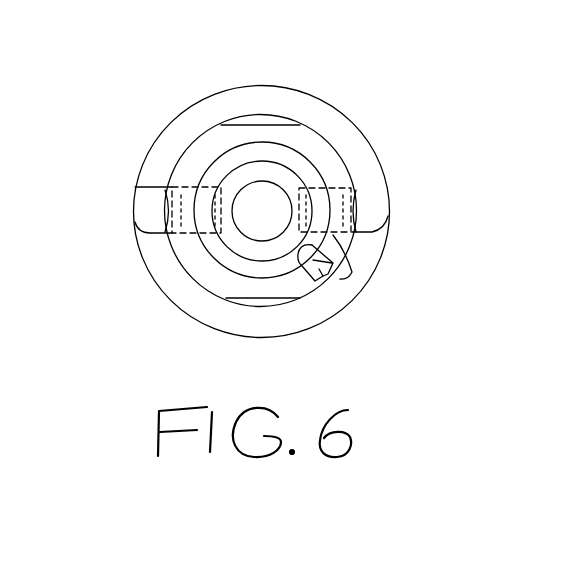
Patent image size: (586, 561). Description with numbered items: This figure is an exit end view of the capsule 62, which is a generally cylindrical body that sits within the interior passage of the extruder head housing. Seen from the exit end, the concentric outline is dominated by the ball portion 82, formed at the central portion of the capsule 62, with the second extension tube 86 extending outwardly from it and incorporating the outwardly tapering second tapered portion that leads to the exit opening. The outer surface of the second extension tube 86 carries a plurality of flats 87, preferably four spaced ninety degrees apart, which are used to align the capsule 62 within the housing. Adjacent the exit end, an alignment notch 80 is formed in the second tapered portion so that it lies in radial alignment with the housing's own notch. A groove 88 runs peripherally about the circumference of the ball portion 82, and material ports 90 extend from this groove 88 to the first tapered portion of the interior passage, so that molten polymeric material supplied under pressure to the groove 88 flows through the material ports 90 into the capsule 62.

The capsule 62 is at (386, 64).
The alignment notch 80 is at (322, 268).
The ball portion 82 is at (187, 312).
The second extension tube 86 is at (315, 128).
The flats 87 is at (260, 125).
The groove 88 is at (338, 133).
The material ports 90 is at (183, 238).